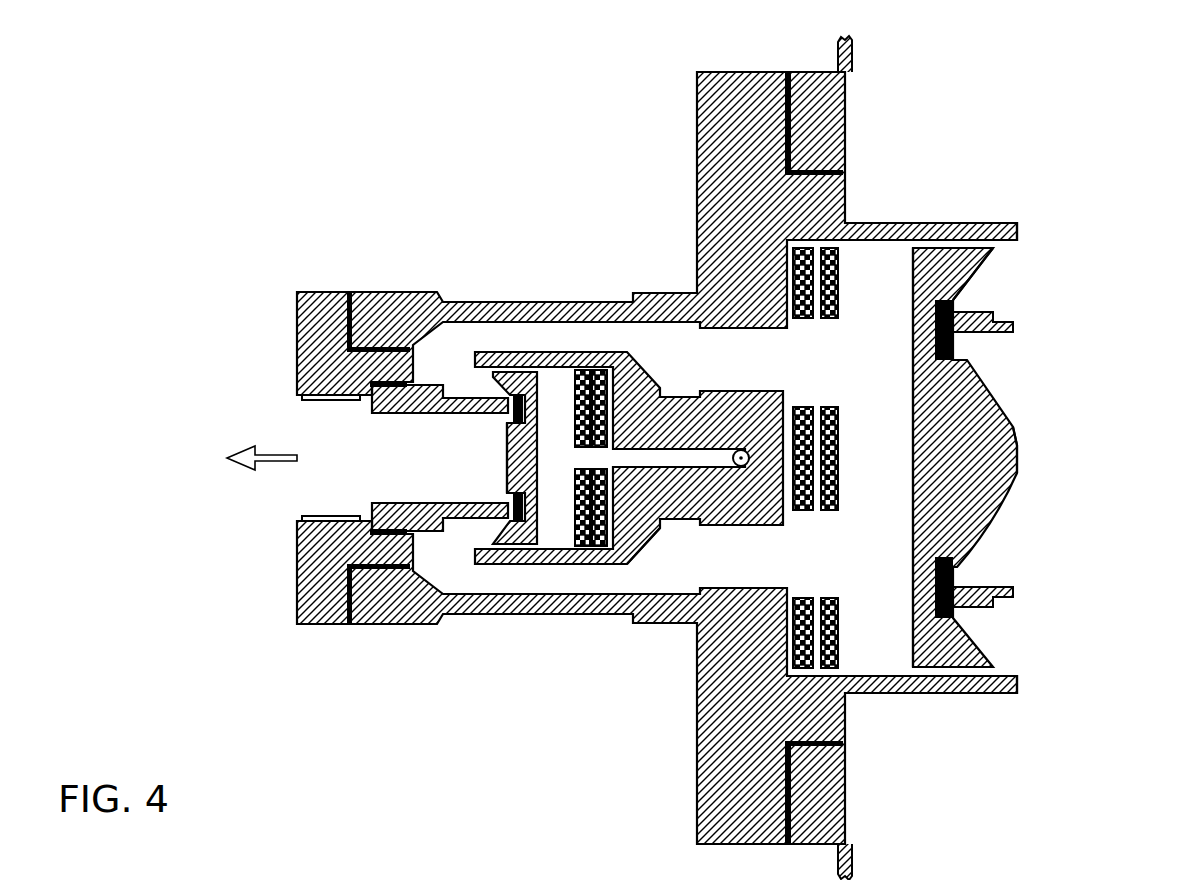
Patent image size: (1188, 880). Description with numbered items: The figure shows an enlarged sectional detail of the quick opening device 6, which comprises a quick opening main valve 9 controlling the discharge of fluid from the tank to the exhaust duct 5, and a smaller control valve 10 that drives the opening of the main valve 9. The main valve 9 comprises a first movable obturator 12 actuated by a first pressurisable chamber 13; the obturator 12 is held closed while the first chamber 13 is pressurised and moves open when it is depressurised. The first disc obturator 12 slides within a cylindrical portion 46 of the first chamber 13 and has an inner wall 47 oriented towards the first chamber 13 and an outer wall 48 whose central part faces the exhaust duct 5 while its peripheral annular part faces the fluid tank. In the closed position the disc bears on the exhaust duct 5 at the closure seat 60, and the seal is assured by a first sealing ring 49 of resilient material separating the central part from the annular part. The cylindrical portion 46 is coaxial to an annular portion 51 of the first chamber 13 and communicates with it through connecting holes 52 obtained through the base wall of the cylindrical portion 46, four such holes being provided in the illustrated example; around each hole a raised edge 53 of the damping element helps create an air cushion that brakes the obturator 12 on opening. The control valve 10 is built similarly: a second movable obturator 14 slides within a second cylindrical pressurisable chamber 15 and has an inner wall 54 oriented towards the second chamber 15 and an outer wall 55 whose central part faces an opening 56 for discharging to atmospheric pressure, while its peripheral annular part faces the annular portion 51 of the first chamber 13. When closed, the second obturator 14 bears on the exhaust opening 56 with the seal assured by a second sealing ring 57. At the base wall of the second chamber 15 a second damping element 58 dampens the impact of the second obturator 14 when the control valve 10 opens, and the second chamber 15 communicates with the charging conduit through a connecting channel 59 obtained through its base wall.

The exhaust duct 5 is at (1000, 332).
The quick opening device 6 is at (925, 190).
The quick opening main valve 9 is at (1005, 284).
The control valve 10 is at (466, 466).
The first movable obturator 12 is at (958, 478).
The first pressurisable chamber 13 is at (760, 548).
The second movable obturator 14 is at (512, 535).
The second pressurisable chamber 15 is at (557, 493).
The cylindrical portion 46 is at (886, 268).
The inner wall 47 is at (905, 405).
The outer wall 48 is at (1012, 427).
The first sealing ring 49 is at (945, 298).
The annular portion 51 is at (480, 335).
The connecting holes 52 is at (745, 367).
The raised edge 53 is at (838, 307).
The inner wall 54 is at (590, 368).
The outer wall 55 is at (499, 447).
The opening 56 is at (440, 487).
The second sealing ring 57 is at (513, 400).
The second damping element 58 is at (585, 535).
The connecting channel 59 is at (665, 455).
The closure seat 60 is at (962, 620).